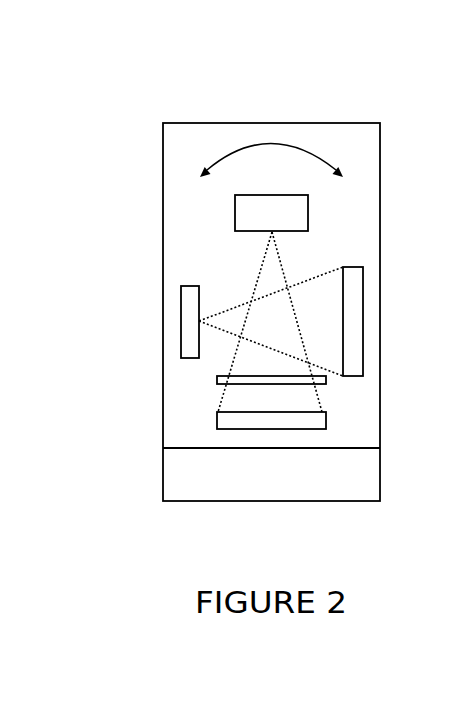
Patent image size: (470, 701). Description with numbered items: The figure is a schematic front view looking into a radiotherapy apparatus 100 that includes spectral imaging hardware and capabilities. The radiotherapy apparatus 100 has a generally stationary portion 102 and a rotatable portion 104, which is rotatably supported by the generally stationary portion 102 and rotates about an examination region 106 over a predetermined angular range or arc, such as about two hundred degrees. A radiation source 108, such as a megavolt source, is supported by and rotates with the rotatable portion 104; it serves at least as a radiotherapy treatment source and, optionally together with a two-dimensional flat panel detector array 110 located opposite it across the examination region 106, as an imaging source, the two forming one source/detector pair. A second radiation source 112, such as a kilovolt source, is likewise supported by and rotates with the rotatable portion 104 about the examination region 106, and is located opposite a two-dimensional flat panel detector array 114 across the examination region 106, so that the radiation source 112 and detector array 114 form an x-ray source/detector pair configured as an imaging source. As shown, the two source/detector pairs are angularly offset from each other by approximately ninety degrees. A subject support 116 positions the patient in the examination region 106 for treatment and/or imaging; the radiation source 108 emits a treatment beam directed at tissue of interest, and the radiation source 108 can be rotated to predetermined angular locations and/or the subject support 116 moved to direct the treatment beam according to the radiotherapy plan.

The radiotherapy apparatus 100 is at (114, 78).
The generally stationary portion 102 is at (163, 473).
The rotatable portion 104 is at (270, 123).
The examination region 106 is at (288, 333).
The radiation source 108 is at (235, 213).
The detector array 110 is at (326, 420).
The radiation source 112 is at (181, 319).
The detector array 114 is at (363, 320).
The subject support 116 is at (217, 377).